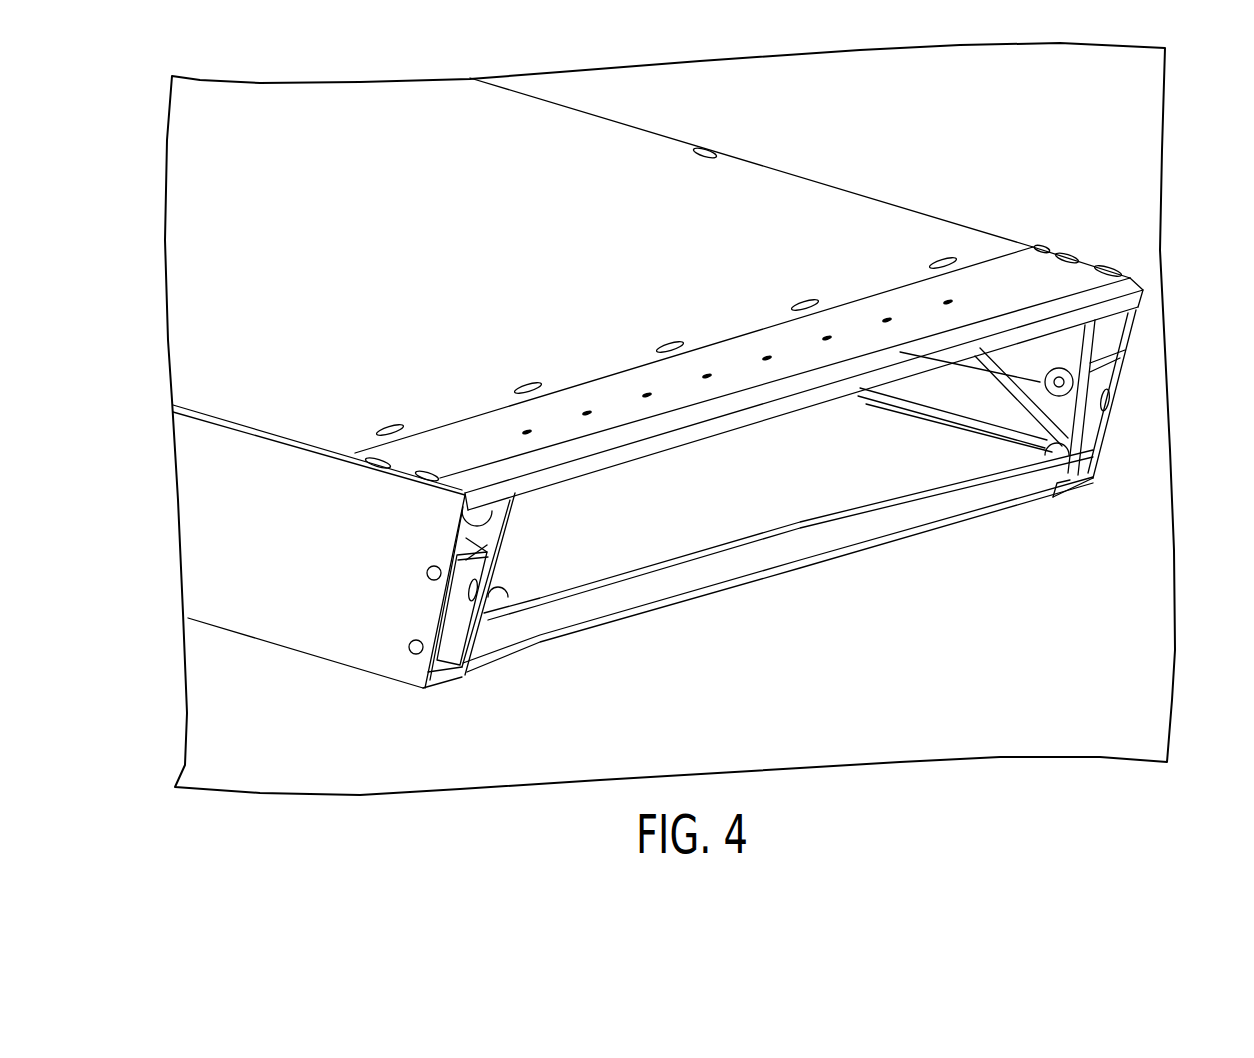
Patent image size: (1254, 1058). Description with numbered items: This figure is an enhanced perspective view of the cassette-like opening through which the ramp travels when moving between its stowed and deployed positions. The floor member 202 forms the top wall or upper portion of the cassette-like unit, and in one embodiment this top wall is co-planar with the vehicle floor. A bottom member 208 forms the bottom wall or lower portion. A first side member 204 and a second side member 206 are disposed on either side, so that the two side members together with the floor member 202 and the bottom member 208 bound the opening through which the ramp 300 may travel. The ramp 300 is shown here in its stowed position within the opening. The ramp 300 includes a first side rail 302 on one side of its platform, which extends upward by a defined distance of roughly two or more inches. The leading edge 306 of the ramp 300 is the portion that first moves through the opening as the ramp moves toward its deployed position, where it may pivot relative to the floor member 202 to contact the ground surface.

The floor member 202 is at (877, 217).
The first side member 204 is at (303, 637).
The second side member 206 is at (1117, 330).
The bottom member 208 is at (588, 648).
The ramp 300 is at (900, 440).
The first side rail 302 is at (1045, 418).
The leading edge 306 is at (828, 515).